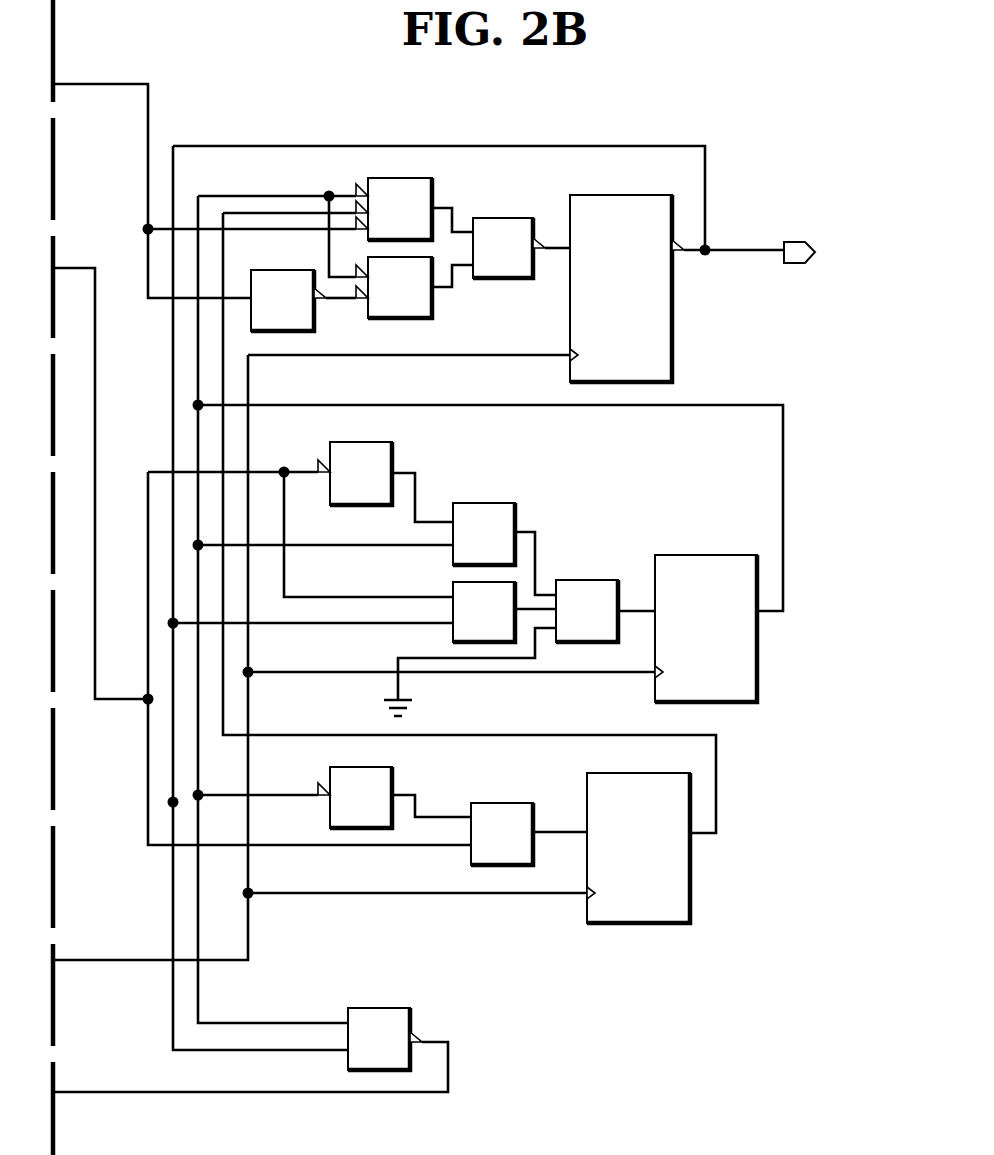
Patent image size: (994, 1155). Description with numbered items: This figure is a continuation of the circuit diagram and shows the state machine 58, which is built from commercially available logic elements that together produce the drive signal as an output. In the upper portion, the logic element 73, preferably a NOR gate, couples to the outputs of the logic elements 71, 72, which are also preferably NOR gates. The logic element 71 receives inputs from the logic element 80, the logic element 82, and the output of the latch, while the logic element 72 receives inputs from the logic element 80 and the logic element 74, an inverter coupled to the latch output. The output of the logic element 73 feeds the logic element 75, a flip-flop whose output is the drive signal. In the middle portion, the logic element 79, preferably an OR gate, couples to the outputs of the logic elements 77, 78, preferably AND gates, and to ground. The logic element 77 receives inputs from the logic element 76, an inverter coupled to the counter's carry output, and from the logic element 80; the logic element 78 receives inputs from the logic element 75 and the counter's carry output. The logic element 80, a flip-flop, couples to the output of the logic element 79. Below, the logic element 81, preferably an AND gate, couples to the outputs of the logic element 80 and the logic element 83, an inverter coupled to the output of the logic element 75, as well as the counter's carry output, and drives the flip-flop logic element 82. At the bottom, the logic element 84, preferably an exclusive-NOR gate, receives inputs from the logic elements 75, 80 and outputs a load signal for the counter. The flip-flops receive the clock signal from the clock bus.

The state machine 58 is at (676, 132).
The logic element 71 is at (432, 192).
The logic element 72 is at (432, 300).
The logic element 73 is at (533, 222).
The logic element 74 is at (314, 331).
The logic element 75 is at (672, 345).
The logic element 76 is at (392, 447).
The logic element 77 is at (515, 515).
The logic element 78 is at (488, 642).
The logic element 79 is at (580, 580).
The logic element 80 is at (757, 655).
The logic element 81 is at (533, 807).
The logic element 82 is at (690, 900).
The logic element 83 is at (392, 772).
The logic element 84 is at (410, 1012).